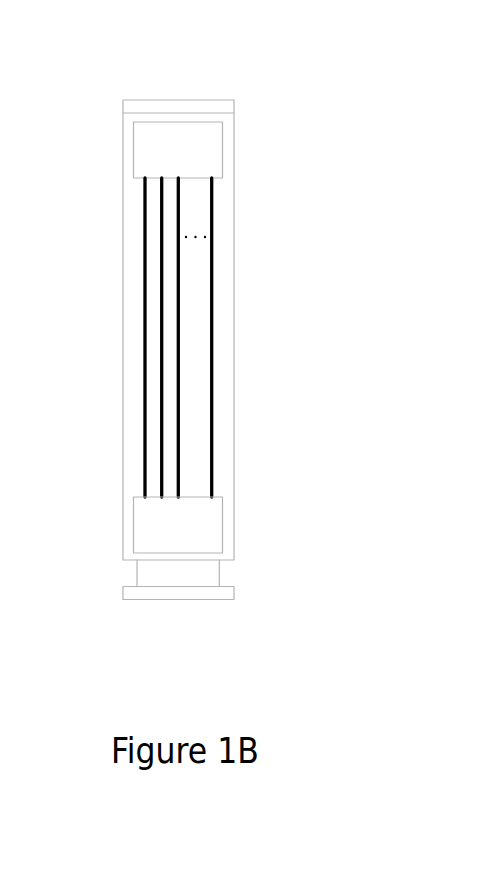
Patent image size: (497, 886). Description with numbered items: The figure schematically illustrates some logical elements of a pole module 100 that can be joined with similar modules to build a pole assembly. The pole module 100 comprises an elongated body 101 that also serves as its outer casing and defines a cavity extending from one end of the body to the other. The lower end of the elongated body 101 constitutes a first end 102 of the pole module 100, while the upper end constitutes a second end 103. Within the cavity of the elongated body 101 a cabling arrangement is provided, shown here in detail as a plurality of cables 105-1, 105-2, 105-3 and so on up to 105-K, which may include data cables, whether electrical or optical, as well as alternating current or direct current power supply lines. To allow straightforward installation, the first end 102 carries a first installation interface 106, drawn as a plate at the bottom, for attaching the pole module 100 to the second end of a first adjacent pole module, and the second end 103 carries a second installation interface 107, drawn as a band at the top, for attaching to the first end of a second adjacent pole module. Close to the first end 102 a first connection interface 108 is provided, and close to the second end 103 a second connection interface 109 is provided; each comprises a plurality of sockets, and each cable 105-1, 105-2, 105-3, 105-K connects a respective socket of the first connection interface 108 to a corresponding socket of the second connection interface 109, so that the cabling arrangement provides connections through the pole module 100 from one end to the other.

The pole module 100 is at (189, 29).
The elongated body 101 is at (123, 398).
The first end 102 is at (163, 582).
The second end 103 is at (163, 129).
The cable 105-1 is at (145, 212).
The cable 105-2 is at (162, 238).
The cable 105-3 is at (178, 270).
The cable 105-K is at (212, 305).
The first installation interface 106 is at (227, 595).
The second installation interface 107 is at (227, 110).
The first connection interface 108 is at (219, 516).
The second connection interface 109 is at (219, 147).